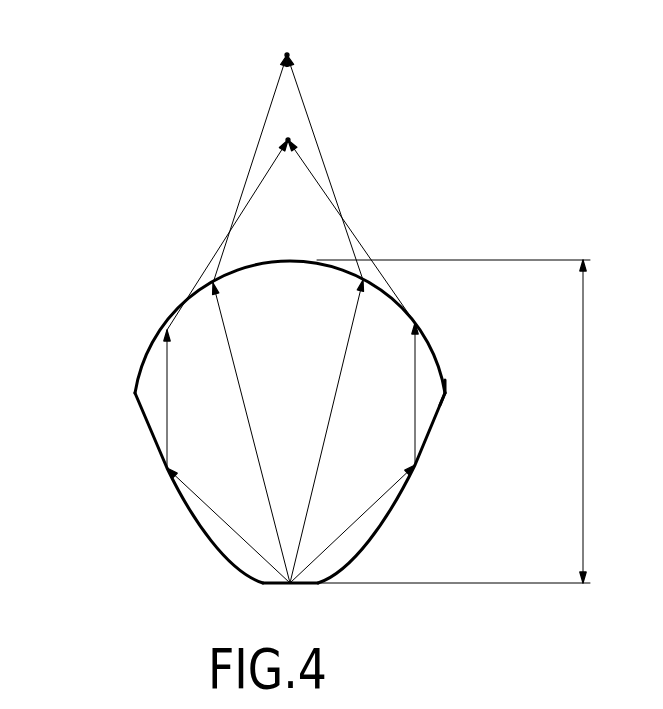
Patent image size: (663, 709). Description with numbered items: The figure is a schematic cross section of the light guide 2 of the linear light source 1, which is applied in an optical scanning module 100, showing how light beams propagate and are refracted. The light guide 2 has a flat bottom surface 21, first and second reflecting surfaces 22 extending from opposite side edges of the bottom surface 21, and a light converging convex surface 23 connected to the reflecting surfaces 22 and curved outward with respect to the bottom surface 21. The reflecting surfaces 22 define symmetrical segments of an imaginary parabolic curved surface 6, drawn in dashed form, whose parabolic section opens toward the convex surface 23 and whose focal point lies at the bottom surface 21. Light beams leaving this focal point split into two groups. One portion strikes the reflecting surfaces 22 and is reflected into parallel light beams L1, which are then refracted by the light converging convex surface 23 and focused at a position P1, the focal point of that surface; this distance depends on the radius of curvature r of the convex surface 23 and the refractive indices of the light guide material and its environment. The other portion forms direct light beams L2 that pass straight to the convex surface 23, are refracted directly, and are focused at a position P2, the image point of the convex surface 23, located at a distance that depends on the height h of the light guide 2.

The optical scanning module 100 is at (102, 147).
The linear light source 1 is at (472, 332).
The light guide 2 is at (447, 397).
The bottom surface 21 is at (303, 587).
The first and second reflecting surfaces 22 is at (147, 428).
The light converging convex surface 23 is at (153, 333).
The imaginary parabolic curved surface 6 is at (310, 585).
The radius of curvature r is at (423, 330).
The height of the light guide h is at (463, 421).
The parallel light beams L1 is at (165, 383).
The direct light beams L2 is at (217, 313).
The focal point position of the convex surface P1 is at (289, 140).
The image point position of the convex surface P2 is at (288, 54).